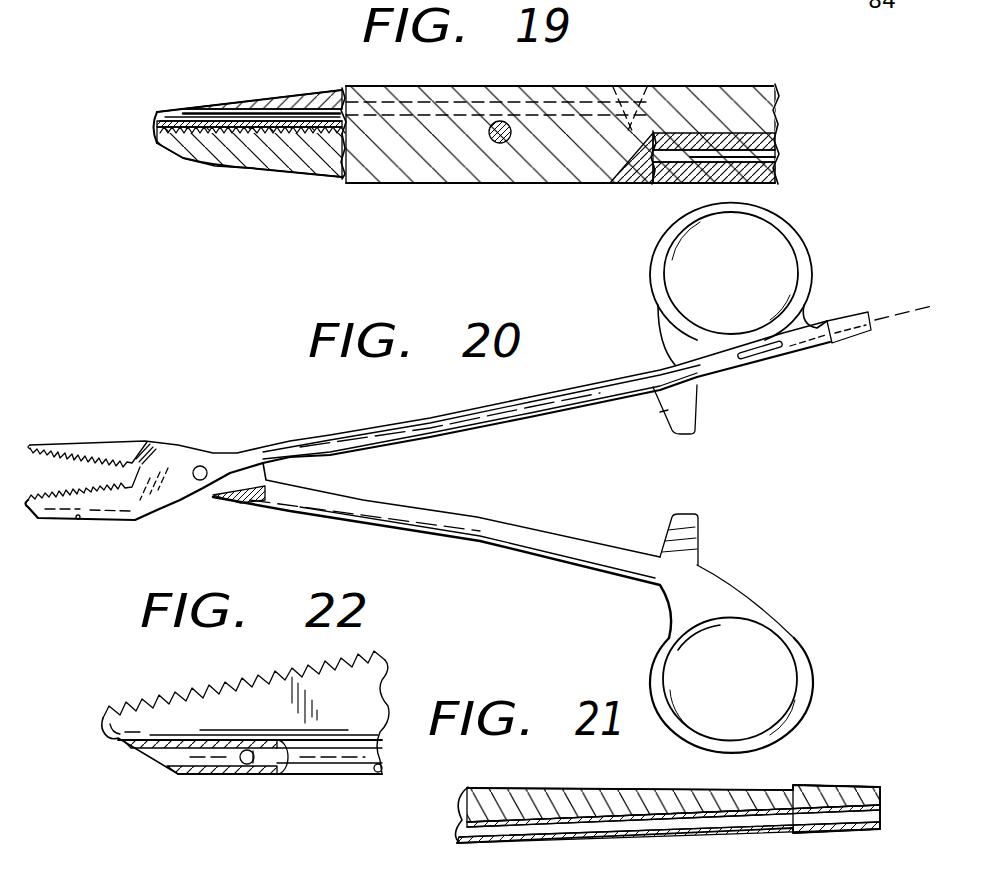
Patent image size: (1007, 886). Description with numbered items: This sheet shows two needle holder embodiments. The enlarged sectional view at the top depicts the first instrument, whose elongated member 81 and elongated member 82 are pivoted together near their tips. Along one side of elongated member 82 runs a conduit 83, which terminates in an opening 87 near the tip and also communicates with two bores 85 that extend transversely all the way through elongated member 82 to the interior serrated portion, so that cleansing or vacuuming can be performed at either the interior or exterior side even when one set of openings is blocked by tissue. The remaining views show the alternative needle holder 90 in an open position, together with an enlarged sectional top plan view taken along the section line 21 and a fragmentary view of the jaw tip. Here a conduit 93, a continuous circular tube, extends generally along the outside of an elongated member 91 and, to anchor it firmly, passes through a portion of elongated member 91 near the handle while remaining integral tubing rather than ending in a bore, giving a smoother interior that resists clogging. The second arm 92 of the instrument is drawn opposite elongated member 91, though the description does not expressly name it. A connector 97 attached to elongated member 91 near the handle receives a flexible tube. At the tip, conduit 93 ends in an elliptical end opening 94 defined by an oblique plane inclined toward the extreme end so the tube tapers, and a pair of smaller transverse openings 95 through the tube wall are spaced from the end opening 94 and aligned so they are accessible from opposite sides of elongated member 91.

In FIG. 20, the section line 21 is at (746, 343).
In FIG. 19, the elongated member 81 is at (256, 165).
In FIG. 19, the elongated member 82 is at (308, 96).
In FIG. 19, the conduit 83 is at (197, 112).
In FIG. 19, the bores 85 is at (270, 106).
In FIG. 19, the opening 87 is at (157, 114).
In FIG. 20, the needle holder 90 is at (296, 430).
In FIG. 20, the elongated member 91 is at (244, 456).
In FIG. 21, the elongated member 91 is at (628, 788).
In FIG. 20, the lower arm 92 is at (430, 532).
In FIG. 22, the lower arm 92 is at (355, 700).
In FIG. 20, the conduit 93 is at (480, 431).
In FIG. 22, the conduit 93 is at (332, 760).
In FIG. 21, the conduit 93 is at (697, 830).
In FIG. 20, the end opening 94 is at (40, 516).
In FIG. 22, the end opening 94 is at (148, 750).
In FIG. 20, the transverse openings 95 is at (80, 519).
In FIG. 22, the transverse openings 95 is at (249, 762).
In FIG. 20, the connector 97 is at (850, 318).
In FIG. 21, the connector 97 is at (860, 830).